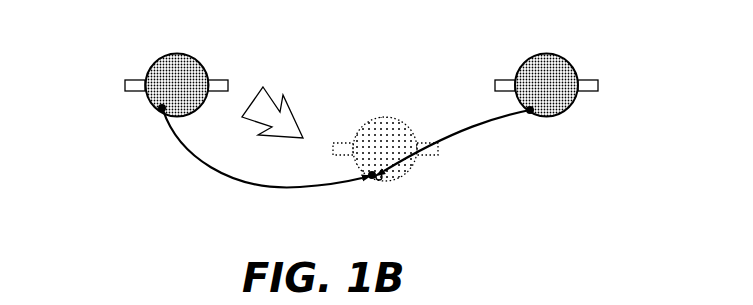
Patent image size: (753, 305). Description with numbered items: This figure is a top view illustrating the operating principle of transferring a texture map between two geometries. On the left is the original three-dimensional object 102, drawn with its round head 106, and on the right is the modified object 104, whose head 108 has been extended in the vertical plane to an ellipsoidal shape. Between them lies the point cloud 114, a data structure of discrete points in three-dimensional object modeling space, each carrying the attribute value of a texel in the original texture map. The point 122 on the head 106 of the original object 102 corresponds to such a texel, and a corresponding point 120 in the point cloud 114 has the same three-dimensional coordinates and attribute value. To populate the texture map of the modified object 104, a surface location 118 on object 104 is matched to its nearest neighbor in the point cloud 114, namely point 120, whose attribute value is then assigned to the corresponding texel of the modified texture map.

The original 3-D object 102 is at (159, 72).
The modified object 104 is at (563, 105).
The round head 106 is at (178, 53).
The ellipsoidal head 108 is at (533, 57).
The point cloud 114 is at (352, 100).
The surface location 118 is at (531, 113).
The point in point cloud 120 is at (373, 179).
The point on original object 122 is at (160, 110).